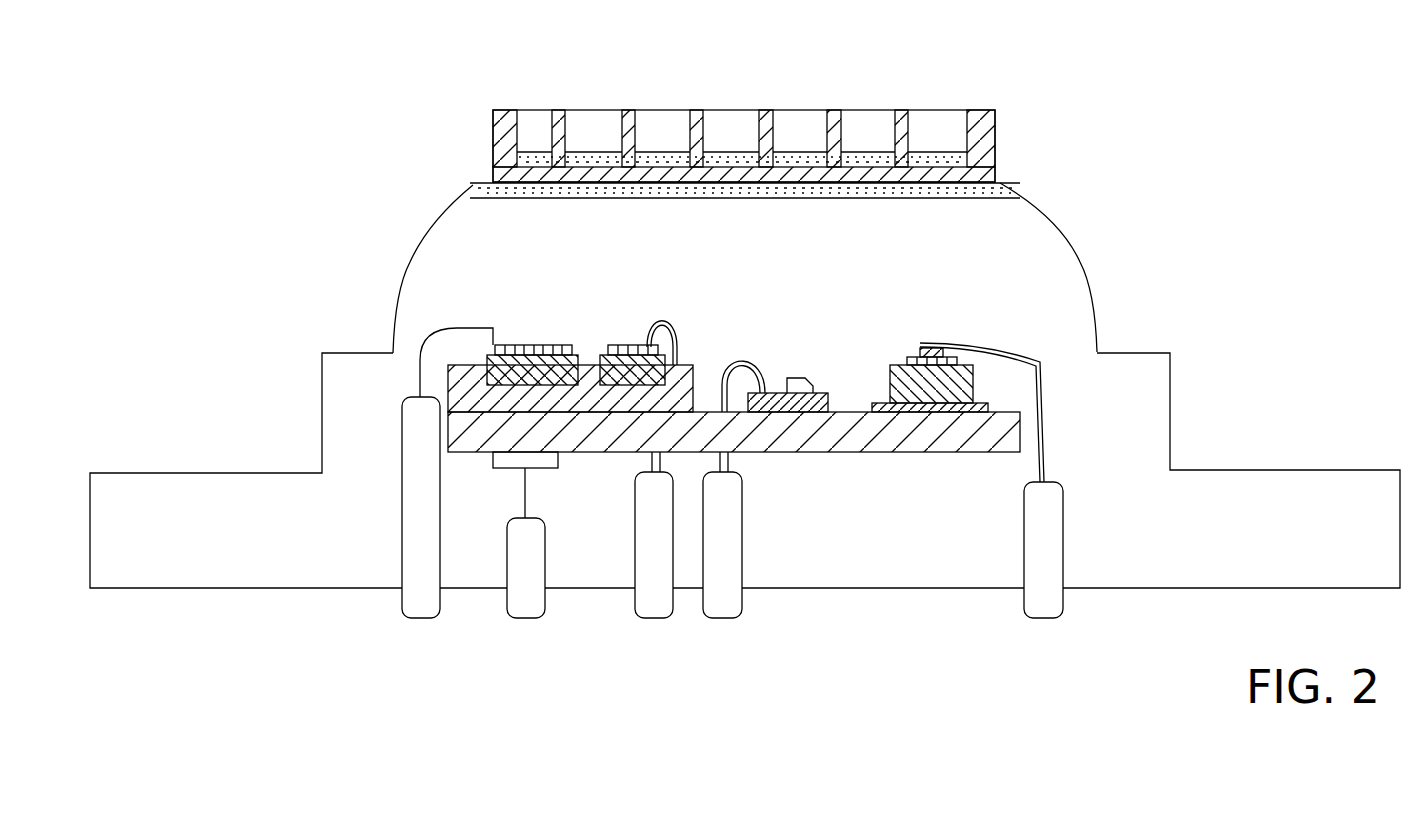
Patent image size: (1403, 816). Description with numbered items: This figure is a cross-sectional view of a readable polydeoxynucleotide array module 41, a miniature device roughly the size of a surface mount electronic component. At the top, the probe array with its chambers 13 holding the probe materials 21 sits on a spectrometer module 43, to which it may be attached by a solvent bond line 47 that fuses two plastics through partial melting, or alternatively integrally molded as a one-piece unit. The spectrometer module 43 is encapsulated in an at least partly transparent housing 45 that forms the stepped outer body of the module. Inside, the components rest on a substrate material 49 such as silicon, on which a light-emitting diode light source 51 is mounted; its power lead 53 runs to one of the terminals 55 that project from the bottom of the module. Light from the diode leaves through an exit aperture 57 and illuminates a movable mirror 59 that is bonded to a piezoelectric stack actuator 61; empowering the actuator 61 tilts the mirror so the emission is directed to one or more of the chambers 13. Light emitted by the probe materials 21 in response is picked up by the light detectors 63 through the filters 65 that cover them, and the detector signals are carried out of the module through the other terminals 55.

The chambers 13 is at (865, 143).
The probe materials 21 is at (800, 157).
The readable polydeoxynucleotide array module 41 is at (430, 228).
The spectrometer module 43 is at (1063, 313).
The at least partly transparent housing 45 is at (1172, 420).
The solvent bond line 47 is at (997, 180).
The substrate material 49 is at (930, 453).
The light-emitting diode light source 51 is at (890, 365).
The power lead 53 is at (970, 343).
The terminals 55 is at (427, 622).
The exit aperture 57 is at (872, 403).
The movable mirror 59 is at (807, 374).
The piezoelectric stack actuator 61 is at (768, 382).
The light detectors 63 is at (598, 360).
The filters 65 is at (513, 345).